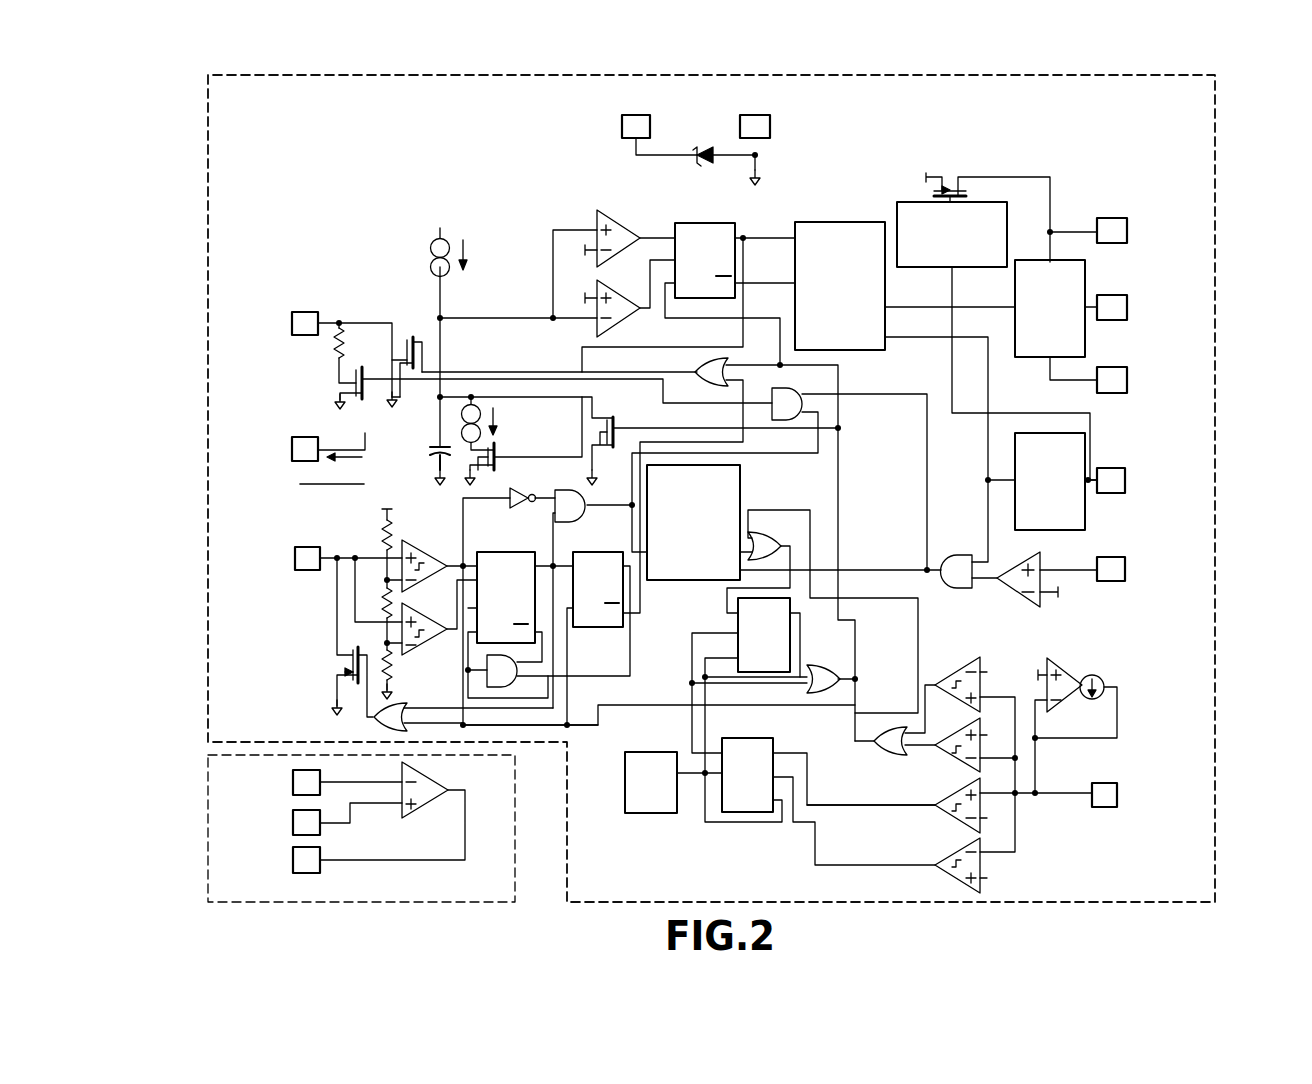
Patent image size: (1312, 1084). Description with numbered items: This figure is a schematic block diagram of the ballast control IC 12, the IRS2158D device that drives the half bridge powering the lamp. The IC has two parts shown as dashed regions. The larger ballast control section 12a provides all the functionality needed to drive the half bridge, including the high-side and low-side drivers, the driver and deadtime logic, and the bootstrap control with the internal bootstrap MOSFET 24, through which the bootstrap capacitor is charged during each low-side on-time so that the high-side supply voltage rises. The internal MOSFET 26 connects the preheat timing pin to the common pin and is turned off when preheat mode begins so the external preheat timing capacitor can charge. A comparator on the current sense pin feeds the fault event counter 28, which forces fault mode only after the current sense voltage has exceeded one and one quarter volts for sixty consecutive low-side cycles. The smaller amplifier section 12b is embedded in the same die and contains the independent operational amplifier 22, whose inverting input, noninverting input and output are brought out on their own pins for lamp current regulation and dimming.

The ballast control IC 12 is at (188, 128).
The ballast control section 12a is at (1217, 152).
The amplifier section 12b is at (208, 808).
The operational amplifier 22 is at (427, 776).
The internal bootstrap MOSFET 24 is at (952, 178).
The internal MOSFET 26 is at (338, 663).
The fault event counter 28 is at (655, 597).